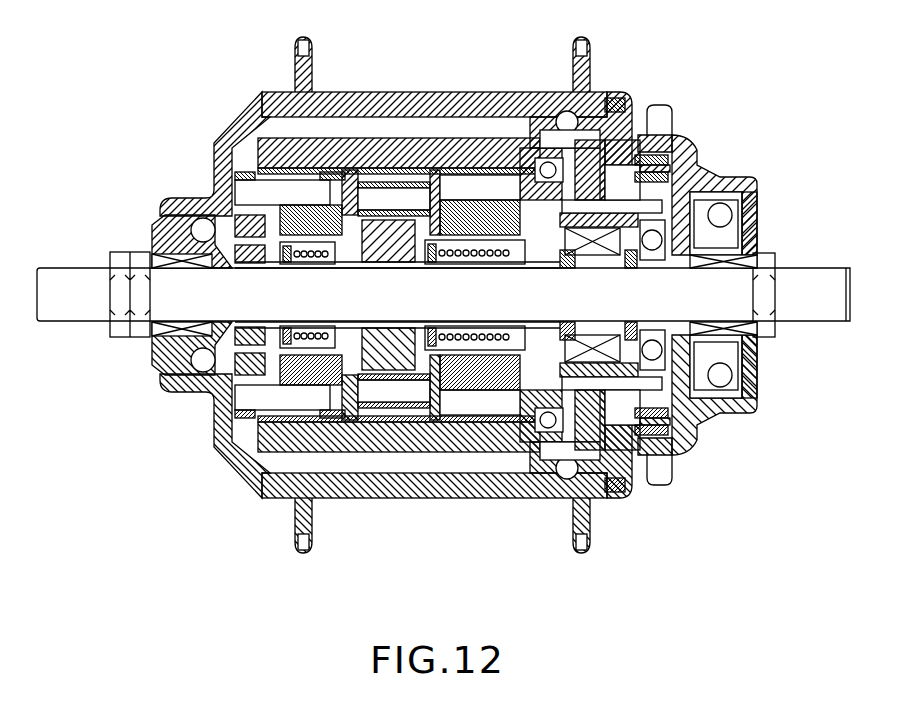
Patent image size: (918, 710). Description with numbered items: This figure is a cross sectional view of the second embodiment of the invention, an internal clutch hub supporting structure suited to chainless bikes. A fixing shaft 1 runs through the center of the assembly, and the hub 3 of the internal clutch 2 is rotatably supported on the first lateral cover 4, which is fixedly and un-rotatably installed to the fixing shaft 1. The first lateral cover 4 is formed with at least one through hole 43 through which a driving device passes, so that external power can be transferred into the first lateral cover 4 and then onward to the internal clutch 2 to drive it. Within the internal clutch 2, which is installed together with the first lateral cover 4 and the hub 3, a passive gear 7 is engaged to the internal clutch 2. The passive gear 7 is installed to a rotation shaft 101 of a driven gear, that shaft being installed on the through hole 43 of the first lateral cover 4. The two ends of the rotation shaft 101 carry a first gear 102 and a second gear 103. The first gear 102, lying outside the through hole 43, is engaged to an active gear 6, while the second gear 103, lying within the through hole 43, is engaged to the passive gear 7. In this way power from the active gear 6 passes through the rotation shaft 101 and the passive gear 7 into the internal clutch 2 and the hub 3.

The fixing shaft 1 is at (788, 267).
The internal clutch 2 is at (490, 150).
The hub 3 is at (383, 92).
The first lateral cover 4 is at (735, 177).
The active gear 6 is at (702, 170).
The passive gear 7 is at (545, 160).
The through hole 43 is at (628, 150).
The rotation shaft 101 is at (663, 147).
The first gear 102 is at (675, 137).
The second gear 103 is at (615, 105).